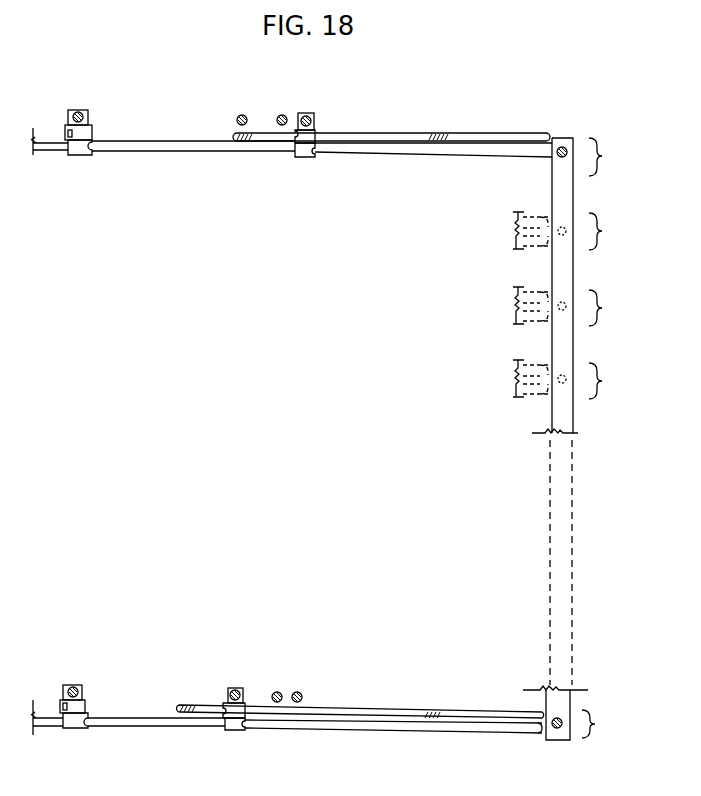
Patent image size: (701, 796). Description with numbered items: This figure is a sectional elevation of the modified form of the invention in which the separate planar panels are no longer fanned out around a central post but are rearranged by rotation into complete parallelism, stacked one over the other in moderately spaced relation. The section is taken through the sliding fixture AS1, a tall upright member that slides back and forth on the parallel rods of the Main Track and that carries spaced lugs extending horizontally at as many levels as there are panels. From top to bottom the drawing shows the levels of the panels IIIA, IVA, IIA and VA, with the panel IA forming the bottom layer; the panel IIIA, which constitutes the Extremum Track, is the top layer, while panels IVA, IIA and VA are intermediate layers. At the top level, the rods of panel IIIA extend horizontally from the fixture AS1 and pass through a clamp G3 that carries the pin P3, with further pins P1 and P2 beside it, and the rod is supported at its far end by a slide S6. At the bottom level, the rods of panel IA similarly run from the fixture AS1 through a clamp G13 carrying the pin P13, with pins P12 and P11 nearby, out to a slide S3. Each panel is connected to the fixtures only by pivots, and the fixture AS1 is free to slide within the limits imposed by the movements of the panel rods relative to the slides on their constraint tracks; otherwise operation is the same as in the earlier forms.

The switch S6 is at (87, 115).
The pin P1 is at (240, 113).
The pin P2 is at (280, 113).
The pin P3 is at (307, 113).
The guide G3 is at (324, 111).
The sliding fixture AS1 is at (546, 194).
The panel IIIA is at (610, 157).
The panel IVA is at (572, 231).
The panel IIA is at (569, 306).
The section VA is at (569, 379).
The switch S3 is at (83, 692).
The guide G13 is at (246, 686).
The pin P13 is at (231, 690).
The pin P12 is at (278, 691).
The pin P11 is at (302, 694).
The panel IA is at (598, 724).